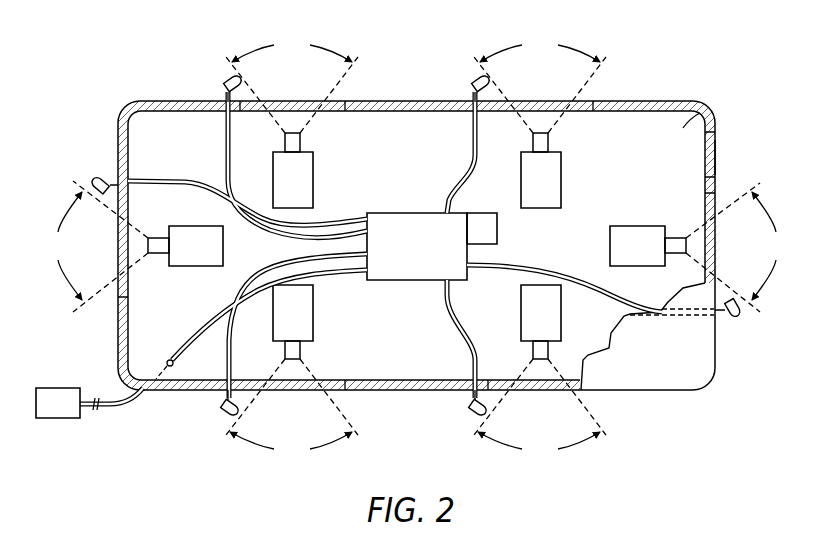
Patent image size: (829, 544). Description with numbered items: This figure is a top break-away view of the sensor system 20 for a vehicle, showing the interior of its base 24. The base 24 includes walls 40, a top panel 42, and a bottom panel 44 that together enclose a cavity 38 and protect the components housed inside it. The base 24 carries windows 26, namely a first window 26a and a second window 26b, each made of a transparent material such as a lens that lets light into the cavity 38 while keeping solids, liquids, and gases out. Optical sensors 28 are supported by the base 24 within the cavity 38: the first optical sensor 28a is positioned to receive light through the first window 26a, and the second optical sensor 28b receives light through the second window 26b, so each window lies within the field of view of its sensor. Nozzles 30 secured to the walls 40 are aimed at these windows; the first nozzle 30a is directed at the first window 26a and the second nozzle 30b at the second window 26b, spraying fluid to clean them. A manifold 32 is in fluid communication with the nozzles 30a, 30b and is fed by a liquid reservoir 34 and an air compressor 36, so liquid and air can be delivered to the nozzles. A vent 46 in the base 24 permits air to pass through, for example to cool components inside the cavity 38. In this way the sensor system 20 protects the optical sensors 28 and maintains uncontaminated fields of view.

The sensor system 20 is at (670, 40).
The base 24 is at (668, 107).
The windows 26 is at (290, 102).
The first window 26a is at (290, 391).
The second window 26b is at (538, 391).
The optical sensors 28 is at (314, 170).
The first optical sensor 28a is at (314, 312).
The second optical sensor 28b is at (521, 310).
The nozzles 30 is at (226, 80).
The first nozzle 30a is at (222, 413).
The second nozzle 30b is at (468, 413).
The manifold 32 is at (400, 212).
The liquid reservoir 34 is at (68, 420).
The air compressor 36 is at (478, 212).
The cavity 38 is at (421, 343).
The walls 40 is at (116, 134).
The top panel 42 is at (655, 372).
The bottom panel 44 is at (705, 106).
The vent 46 is at (716, 157).